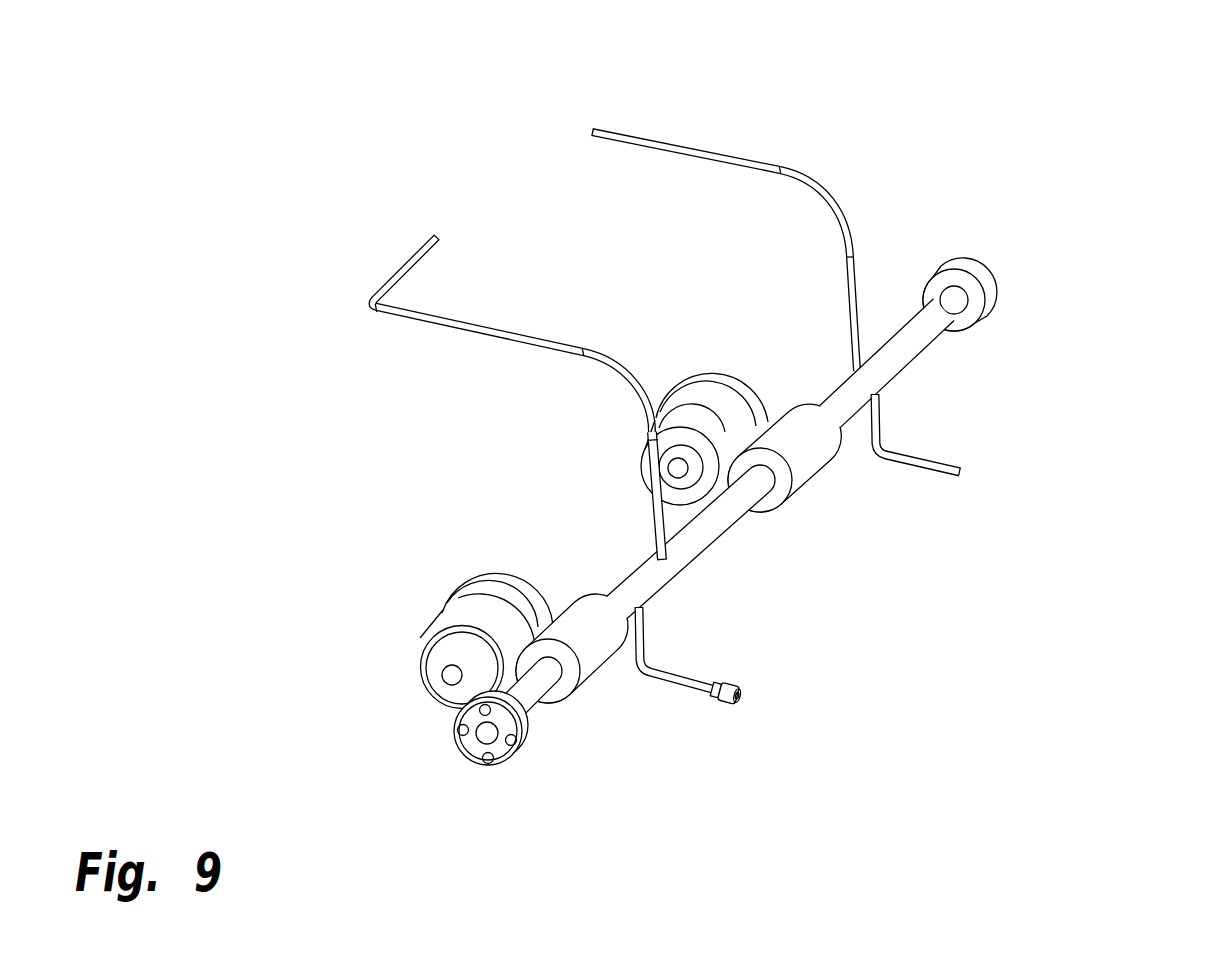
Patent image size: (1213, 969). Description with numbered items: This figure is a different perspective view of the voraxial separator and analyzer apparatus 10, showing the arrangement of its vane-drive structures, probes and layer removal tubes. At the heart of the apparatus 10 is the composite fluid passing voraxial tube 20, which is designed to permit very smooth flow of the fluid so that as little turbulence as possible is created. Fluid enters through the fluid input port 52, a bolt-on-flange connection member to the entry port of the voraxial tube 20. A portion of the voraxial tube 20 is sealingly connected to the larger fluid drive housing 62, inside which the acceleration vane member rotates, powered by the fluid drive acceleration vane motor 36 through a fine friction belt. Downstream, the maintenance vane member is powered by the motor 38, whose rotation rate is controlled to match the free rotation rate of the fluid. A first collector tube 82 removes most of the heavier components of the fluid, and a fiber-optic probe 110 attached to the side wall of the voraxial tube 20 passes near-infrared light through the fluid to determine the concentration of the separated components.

The voraxial separator and analyzer apparatus 10 is at (1070, 143).
The voraxial tube 20 is at (970, 330).
The fluid drive acceleration vane motor 36 is at (489, 627).
The motor 38 is at (720, 432).
The fluid input port 52 is at (472, 762).
The fluid drive housing 62 is at (817, 455).
The first collector tube 82 is at (952, 456).
The fiber-optic probe 110 is at (655, 520).